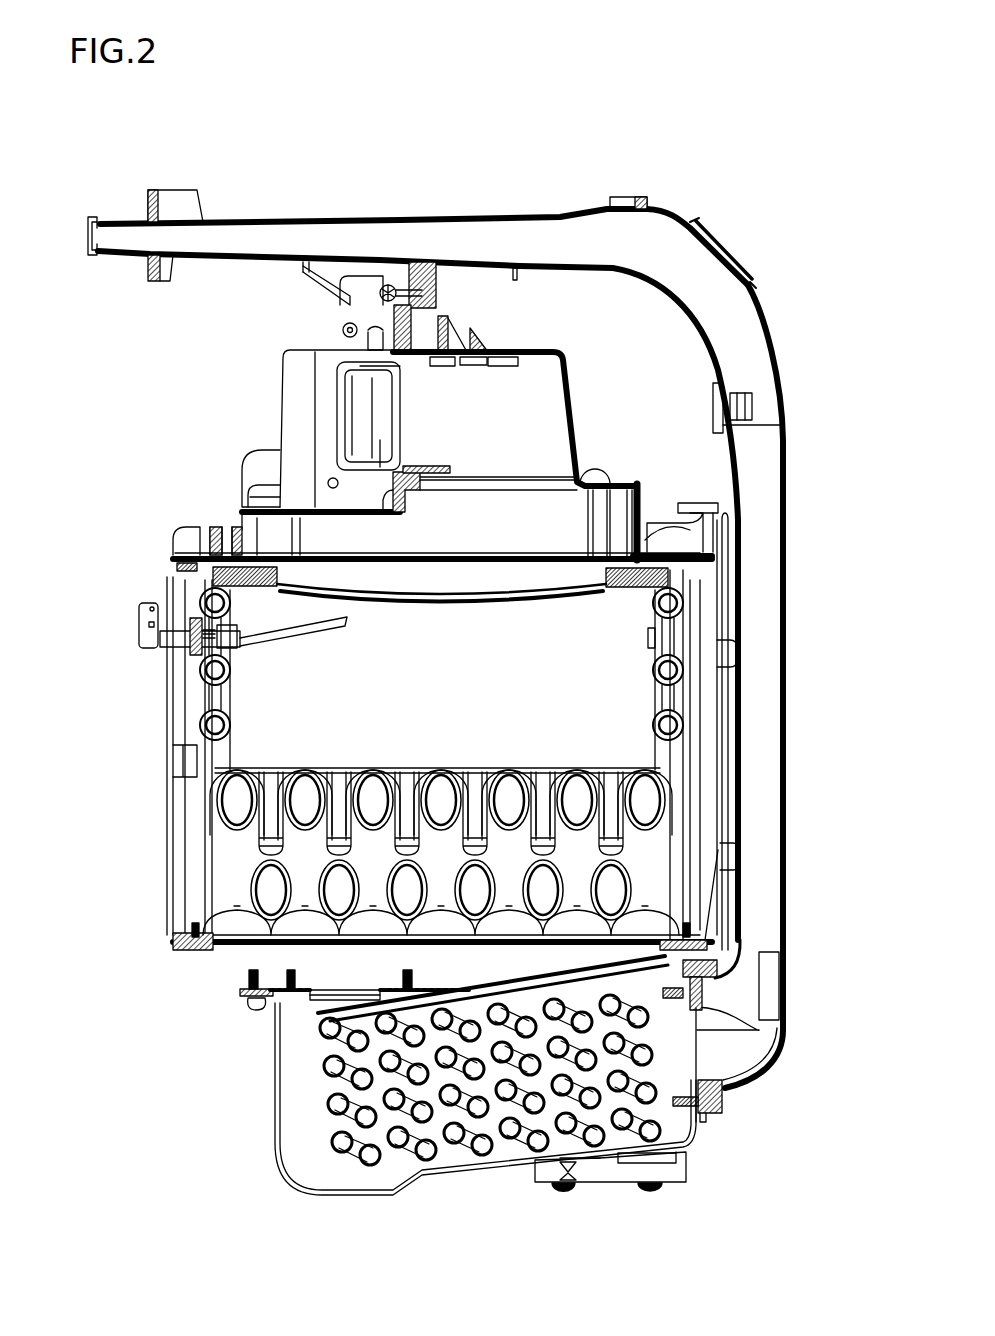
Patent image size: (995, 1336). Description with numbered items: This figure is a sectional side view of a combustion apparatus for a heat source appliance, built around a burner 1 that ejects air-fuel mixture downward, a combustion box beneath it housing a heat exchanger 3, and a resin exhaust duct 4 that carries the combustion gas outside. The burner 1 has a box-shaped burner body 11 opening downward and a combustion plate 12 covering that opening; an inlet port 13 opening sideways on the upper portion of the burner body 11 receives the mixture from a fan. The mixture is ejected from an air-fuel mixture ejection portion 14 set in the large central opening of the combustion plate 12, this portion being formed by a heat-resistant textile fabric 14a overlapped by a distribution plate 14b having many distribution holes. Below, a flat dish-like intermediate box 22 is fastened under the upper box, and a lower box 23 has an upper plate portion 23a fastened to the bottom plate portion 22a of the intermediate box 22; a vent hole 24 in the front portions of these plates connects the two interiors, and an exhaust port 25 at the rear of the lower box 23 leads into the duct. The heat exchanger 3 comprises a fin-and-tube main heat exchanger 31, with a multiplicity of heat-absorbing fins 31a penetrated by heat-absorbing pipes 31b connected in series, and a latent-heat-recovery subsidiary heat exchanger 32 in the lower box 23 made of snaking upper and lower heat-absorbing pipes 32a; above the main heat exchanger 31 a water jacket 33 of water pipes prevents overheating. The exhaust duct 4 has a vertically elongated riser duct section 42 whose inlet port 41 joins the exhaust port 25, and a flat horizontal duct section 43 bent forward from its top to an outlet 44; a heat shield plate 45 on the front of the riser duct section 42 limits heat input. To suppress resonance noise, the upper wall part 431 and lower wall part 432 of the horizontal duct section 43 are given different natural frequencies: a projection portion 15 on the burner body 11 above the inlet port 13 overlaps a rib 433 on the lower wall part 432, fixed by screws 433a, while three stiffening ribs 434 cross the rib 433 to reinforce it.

The burner 1 is at (405, 455).
The heat exchanger 3 is at (387, 975).
The exhaust duct 4 is at (448, 641).
The burner body 11 is at (266, 505).
The combustion plate 12 is at (597, 592).
The inlet port 13 is at (372, 420).
The air-fuel mixture ejection portion 14 is at (441, 636).
The textile fabric 14a is at (426, 598).
The distribution plate 14b is at (396, 652).
The projection portion 15 is at (350, 283).
The intermediate box 22 is at (417, 763).
The bottom plate portion 22a is at (445, 995).
The lower box 23 is at (448, 1075).
The upper plate portion 23a is at (508, 1000).
The vent hole 24 is at (335, 998).
The exhaust port 25 is at (733, 1092).
The main heat exchanger 31 is at (402, 858).
The heat-absorbing fins 31a is at (460, 775).
The heat-absorbing pipes 31b is at (352, 772).
The subsidiary heat exchanger 32 is at (392, 1120).
The heat-absorbing pipes 32a is at (530, 1118).
The water jacket 33 is at (655, 725).
The inlet port 41 is at (759, 1030).
The riser duct section 42 is at (786, 668).
The horizontal duct section 43 is at (428, 217).
The upper wall part 431 is at (398, 218).
The lower wall part 432 is at (488, 266).
The rib 433 is at (437, 282).
The screws 433a is at (350, 297).
The stiffening ribs 434 is at (302, 266).
The outlet 44 is at (92, 240).
The heat shield plate 45 is at (728, 740).